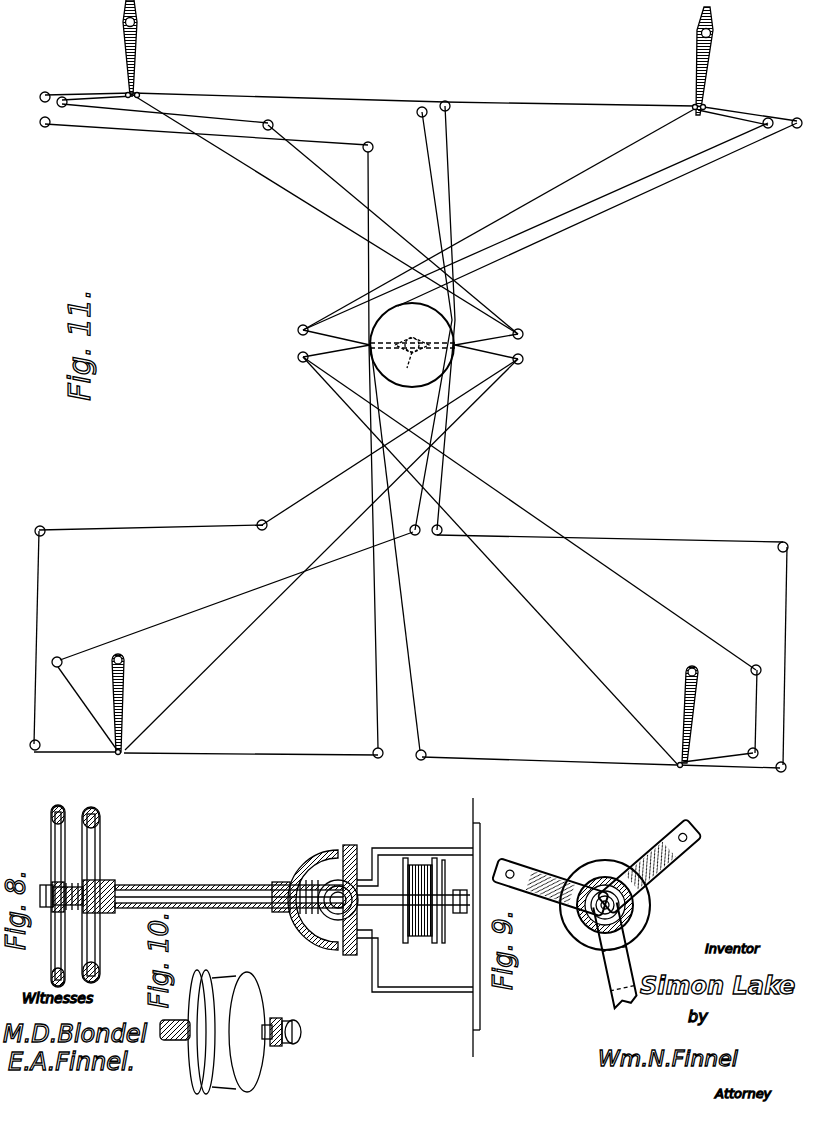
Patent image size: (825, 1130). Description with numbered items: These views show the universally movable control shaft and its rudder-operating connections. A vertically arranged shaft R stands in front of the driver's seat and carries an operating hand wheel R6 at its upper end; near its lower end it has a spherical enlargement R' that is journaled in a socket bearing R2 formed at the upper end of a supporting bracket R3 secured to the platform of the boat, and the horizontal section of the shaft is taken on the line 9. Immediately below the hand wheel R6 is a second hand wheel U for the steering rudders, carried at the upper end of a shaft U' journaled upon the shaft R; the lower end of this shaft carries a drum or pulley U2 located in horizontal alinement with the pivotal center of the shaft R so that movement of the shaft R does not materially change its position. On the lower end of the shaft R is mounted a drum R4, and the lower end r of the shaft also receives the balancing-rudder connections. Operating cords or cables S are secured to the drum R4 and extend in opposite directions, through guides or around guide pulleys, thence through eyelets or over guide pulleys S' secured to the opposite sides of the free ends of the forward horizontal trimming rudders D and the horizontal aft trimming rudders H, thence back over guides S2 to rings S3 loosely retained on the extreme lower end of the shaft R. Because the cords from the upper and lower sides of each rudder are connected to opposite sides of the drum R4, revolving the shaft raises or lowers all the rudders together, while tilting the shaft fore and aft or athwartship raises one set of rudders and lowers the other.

In FIG. 11, the operating cords or cables S is at (407, 427).
In FIG. 10, the operating cords or cables S is at (205, 993).
In FIG. 11, the guide pulleys S' is at (415, 448).
In FIG. 8, the guide pulleys S' is at (414, 844).
In FIG. 11, the guides S2 is at (62, 96).
In FIG. 11, the rings S3 is at (411, 352).
In FIG. 10, the rings S3 is at (275, 1044).
In FIG. 11, the forward horizontal trimming rudders D is at (127, 63).
In FIG. 11, the horizontal aft trimming rudders H is at (123, 692).
In FIG. 8, the shaft R is at (229, 871).
In FIG. 8, the spherical enlargement R' is at (312, 871).
In FIG. 9, the spherical enlargement R' is at (582, 872).
In FIG. 8, the socket bearing R2 is at (333, 875).
In FIG. 9, the socket bearing R2 is at (600, 880).
In FIG. 8, the supporting bracket R3 is at (378, 988).
In FIG. 9, the supporting bracket R3 is at (604, 975).
In FIG. 11, the drum R4 is at (433, 360).
In FIG. 8, the drum R4 is at (420, 936).
In FIG. 10, the drum R4 is at (220, 1090).
In FIG. 9, the drum R4 is at (645, 903).
In FIG. 8, the hand wheel R6 is at (50, 842).
In FIG. 8, the hand wheel U is at (85, 896).
In FIG. 8, the shaft U' is at (123, 895).
In FIG. 8, the drum or pulley U2 is at (320, 946).
In FIG. 8, the lower end of the shaft r is at (455, 916).
In FIG. 10, the lower end of the shaft r is at (257, 953).
In FIG. 8, the section line 9— 9 is at (357, 845).